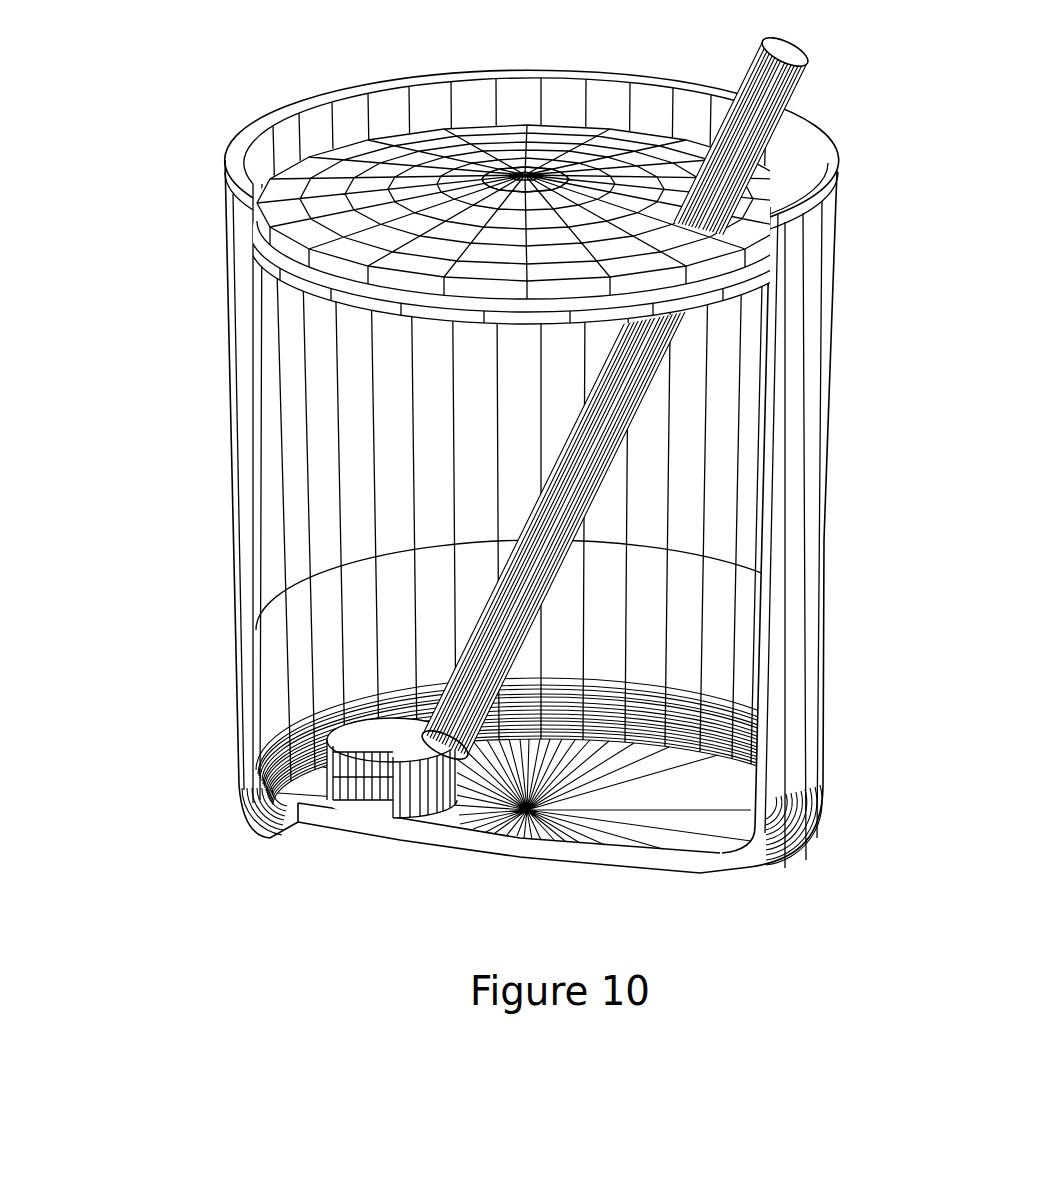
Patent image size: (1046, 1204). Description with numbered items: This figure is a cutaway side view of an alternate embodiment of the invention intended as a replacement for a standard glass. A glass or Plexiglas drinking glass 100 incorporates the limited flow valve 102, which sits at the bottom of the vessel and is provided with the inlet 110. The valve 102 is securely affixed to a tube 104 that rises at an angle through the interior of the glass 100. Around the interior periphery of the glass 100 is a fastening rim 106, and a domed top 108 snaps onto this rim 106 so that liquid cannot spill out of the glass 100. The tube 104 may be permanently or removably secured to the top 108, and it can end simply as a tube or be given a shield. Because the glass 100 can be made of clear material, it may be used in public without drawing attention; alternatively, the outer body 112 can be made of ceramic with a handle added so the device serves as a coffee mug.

The drinking glass 100 is at (486, 483).
The limited flow valve 102 is at (410, 808).
The tube 104 is at (797, 98).
The fastening rim 106 is at (390, 316).
The domed top 108 is at (523, 175).
The inlet 110 is at (348, 827).
The outer body 112 is at (228, 323).